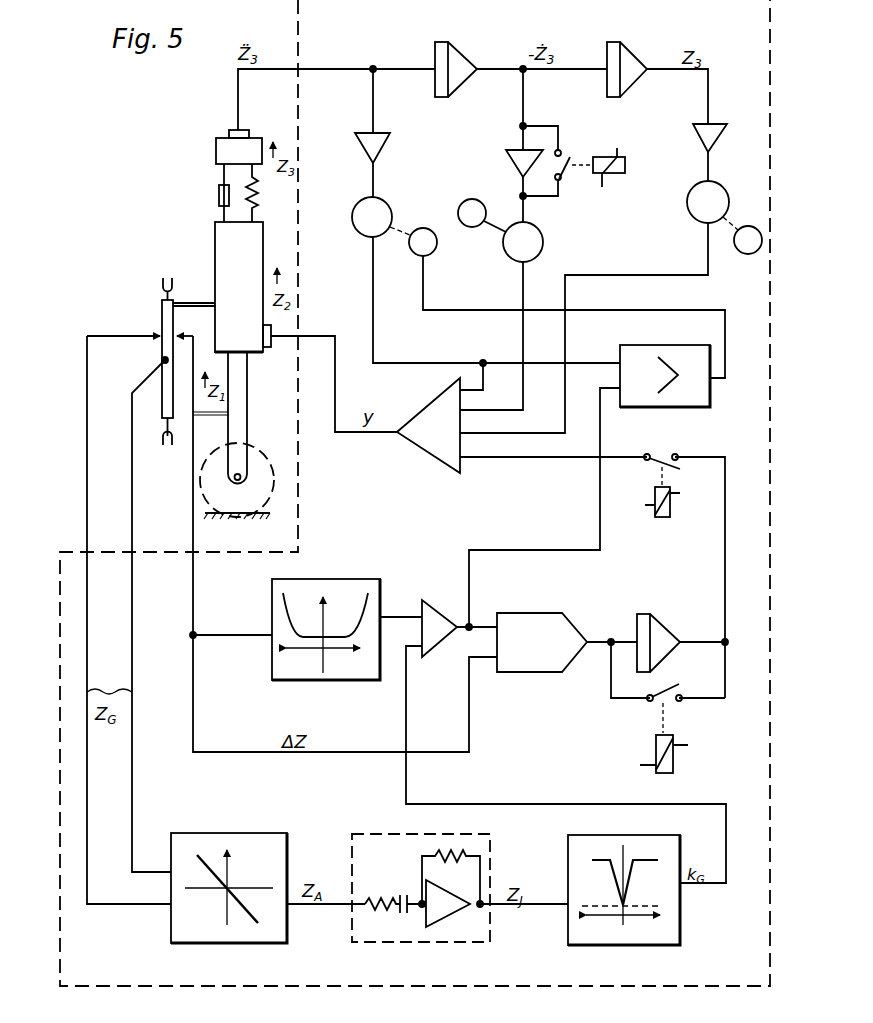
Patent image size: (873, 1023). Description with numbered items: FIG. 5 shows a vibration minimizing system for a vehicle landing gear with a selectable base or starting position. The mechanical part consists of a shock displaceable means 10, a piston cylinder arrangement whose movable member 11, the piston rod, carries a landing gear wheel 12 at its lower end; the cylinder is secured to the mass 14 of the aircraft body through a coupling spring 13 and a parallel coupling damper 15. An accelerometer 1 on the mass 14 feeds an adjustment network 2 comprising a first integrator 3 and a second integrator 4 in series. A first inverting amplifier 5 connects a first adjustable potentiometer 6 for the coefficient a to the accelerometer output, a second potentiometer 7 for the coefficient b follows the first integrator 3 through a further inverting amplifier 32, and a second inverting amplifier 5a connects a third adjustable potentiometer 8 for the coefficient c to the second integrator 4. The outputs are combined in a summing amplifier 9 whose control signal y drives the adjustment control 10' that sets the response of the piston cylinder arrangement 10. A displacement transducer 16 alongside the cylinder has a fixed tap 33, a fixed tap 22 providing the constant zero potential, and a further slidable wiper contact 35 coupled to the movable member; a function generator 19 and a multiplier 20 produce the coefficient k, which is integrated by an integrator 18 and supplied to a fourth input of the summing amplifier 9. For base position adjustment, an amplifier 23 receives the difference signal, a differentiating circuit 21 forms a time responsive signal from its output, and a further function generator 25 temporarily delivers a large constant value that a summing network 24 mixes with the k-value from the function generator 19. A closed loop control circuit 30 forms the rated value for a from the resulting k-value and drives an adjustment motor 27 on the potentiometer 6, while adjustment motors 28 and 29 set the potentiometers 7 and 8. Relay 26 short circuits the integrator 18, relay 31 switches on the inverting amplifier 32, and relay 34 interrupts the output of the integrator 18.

The accelerometer 1 is at (232, 130).
The adjustment network 2 is at (298, 33).
The first integrator 3 is at (452, 42).
The second integrator 4 is at (625, 45).
The first inverting amplifier 5 is at (362, 133).
The second inverting amplifier 5a is at (715, 124).
The first adjustable potentiometer 6 is at (388, 200).
The second potentiometer 7 is at (545, 235).
The third adjustable potentiometer 8 is at (722, 186).
The summing amplifier 9 is at (420, 409).
The shock displaceable means 10 is at (217, 285).
The adjustment control 10' is at (287, 353).
The movable member 11 is at (247, 385).
The landing gear wheel 12 is at (262, 452).
The coupling spring 13 is at (255, 184).
The mass 14 is at (216, 150).
The coupling damper 15 is at (219, 195).
The displacement transducer 16 is at (162, 300).
The integrator 18 is at (660, 614).
The function generator 19 is at (365, 579).
The multiplier 20 is at (543, 613).
The differentiating circuit 21 is at (370, 834).
The fixed tap 22 is at (163, 360).
The amplifier 23 is at (213, 833).
The summing network 24 is at (430, 657).
The further function generator 25 is at (680, 908).
The relay 26 is at (680, 764).
The adjustment motor 27 is at (433, 254).
The adjustment motor 28 is at (470, 198).
The adjustment motor 29 is at (748, 254).
The closed loop control circuit 30 is at (700, 407).
The relay 31 is at (622, 175).
The further inverting amplifier 32 is at (512, 148).
The fixed tap 33 is at (139, 334).
The relay 34 is at (670, 517).
The further slidable wiper contact 35 is at (186, 336).